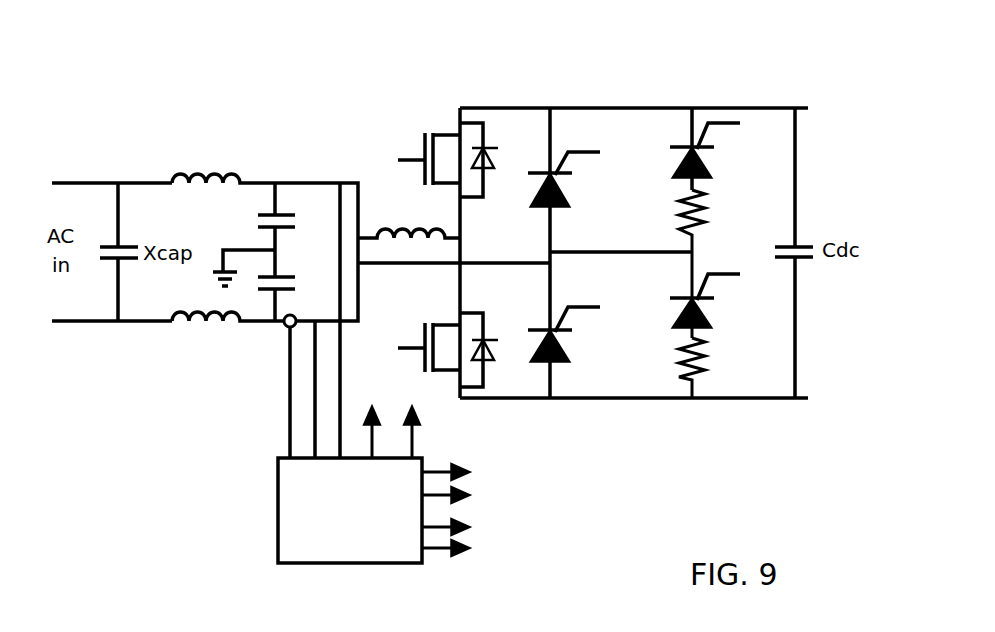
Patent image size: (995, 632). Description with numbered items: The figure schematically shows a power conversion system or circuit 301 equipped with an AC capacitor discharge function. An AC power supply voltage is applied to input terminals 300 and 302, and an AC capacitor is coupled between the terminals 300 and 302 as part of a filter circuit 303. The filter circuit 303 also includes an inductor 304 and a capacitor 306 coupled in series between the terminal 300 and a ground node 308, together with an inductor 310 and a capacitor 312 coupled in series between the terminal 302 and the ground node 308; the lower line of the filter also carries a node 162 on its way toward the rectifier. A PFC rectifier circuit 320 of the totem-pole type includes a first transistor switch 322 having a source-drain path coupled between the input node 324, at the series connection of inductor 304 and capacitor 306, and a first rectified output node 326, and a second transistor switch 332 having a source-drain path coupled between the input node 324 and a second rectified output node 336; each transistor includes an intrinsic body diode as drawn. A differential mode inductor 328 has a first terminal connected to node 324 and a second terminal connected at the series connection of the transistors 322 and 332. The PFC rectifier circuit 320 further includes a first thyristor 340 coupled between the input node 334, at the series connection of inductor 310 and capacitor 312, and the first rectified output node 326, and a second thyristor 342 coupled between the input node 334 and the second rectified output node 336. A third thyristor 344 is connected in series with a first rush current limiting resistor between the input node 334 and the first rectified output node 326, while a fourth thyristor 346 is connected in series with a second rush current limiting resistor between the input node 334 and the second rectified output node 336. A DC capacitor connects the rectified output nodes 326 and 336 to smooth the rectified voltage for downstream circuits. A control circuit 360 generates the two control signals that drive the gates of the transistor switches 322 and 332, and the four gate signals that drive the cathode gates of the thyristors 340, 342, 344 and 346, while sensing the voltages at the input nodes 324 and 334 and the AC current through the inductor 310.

The input terminal 300 is at (67, 181).
The input terminal 302 is at (75, 323).
The filter circuit 303 is at (271, 160).
The inductor 304 is at (192, 170).
The capacitor 306 is at (258, 221).
The ground node 308 is at (216, 280).
The inductor 310 is at (186, 332).
The capacitor 312 is at (292, 287).
The input node 324 is at (303, 181).
The neutral node 162 is at (285, 332).
The power conversion system or circuit 301 is at (362, 80).
The first transistor switch 322 is at (430, 132).
The differential mode inductor 328 is at (397, 226).
The second transistor switch 332 is at (432, 377).
The input node 334 is at (360, 303).
The PFC rectifier circuit 320 is at (604, 80).
The first rectified output node 326 is at (725, 106).
The second rectified output node 336 is at (570, 400).
The first thyristor 340 is at (568, 192).
The second thyristor 342 is at (568, 355).
The third thyristor 344 is at (706, 166).
The fourth thyristor 346 is at (712, 322).
The control circuit 360 is at (278, 502).